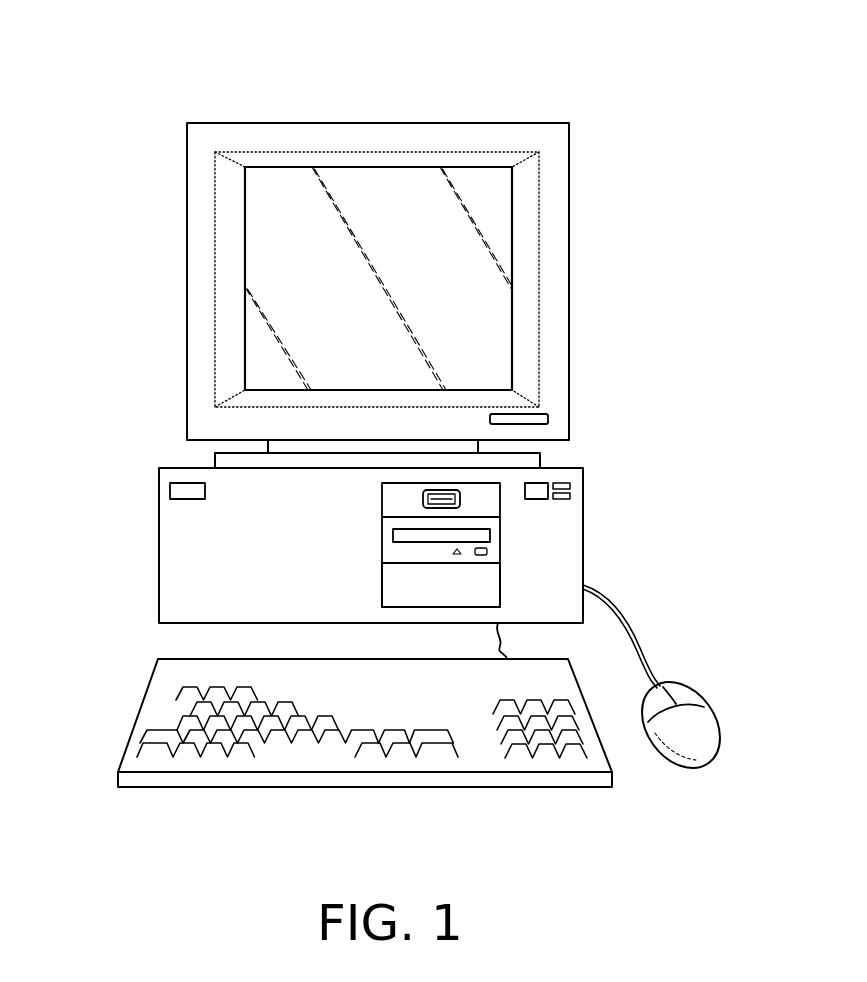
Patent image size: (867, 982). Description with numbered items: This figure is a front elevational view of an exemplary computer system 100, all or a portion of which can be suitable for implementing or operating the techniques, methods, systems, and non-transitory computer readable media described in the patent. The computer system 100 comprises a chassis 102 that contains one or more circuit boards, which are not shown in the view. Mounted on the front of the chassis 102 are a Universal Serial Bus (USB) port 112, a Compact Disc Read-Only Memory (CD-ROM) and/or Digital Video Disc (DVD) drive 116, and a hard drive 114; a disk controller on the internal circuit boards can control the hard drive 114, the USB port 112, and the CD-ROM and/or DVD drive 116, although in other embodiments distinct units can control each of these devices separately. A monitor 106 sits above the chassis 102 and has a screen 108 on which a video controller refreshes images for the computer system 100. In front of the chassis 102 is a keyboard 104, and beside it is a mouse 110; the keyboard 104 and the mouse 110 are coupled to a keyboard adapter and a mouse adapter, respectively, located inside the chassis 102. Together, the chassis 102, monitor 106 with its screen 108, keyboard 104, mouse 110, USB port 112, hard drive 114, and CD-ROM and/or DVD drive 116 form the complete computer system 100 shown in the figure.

The computer system 100 is at (560, 100).
The chassis 102 is at (159, 547).
The keyboard 104 is at (139, 712).
The monitor 106 is at (265, 122).
The screen 108 is at (292, 284).
The mouse 110 is at (700, 715).
The Universal Serial Bus (USB) port 112 is at (460, 496).
The hard drive 114 is at (490, 583).
The Compact Disc Read-Only Memory (CD-ROM) and/or Digital Video Disc (DVD) drive 116 is at (490, 542).